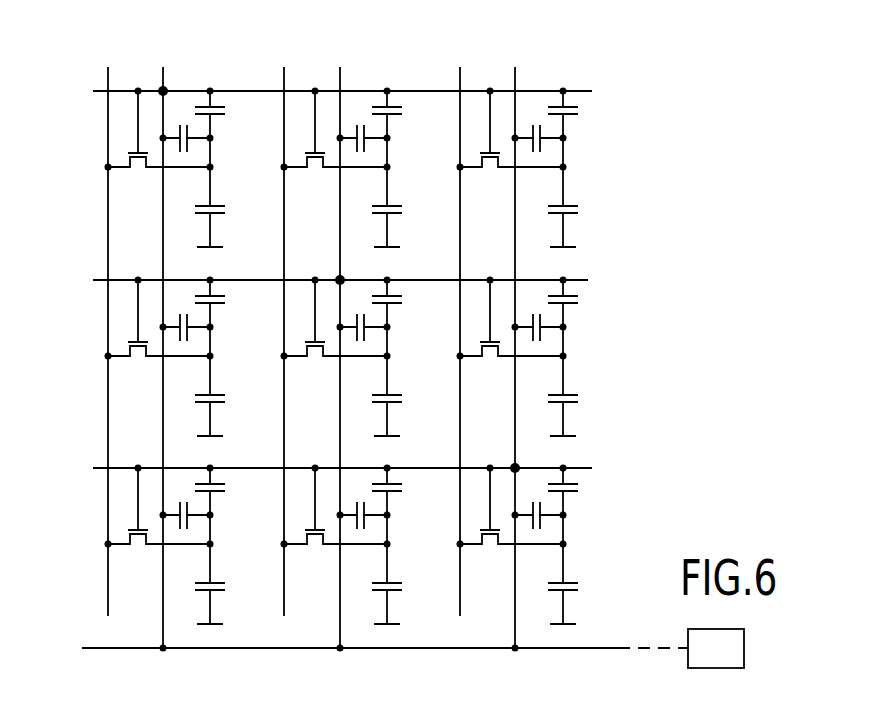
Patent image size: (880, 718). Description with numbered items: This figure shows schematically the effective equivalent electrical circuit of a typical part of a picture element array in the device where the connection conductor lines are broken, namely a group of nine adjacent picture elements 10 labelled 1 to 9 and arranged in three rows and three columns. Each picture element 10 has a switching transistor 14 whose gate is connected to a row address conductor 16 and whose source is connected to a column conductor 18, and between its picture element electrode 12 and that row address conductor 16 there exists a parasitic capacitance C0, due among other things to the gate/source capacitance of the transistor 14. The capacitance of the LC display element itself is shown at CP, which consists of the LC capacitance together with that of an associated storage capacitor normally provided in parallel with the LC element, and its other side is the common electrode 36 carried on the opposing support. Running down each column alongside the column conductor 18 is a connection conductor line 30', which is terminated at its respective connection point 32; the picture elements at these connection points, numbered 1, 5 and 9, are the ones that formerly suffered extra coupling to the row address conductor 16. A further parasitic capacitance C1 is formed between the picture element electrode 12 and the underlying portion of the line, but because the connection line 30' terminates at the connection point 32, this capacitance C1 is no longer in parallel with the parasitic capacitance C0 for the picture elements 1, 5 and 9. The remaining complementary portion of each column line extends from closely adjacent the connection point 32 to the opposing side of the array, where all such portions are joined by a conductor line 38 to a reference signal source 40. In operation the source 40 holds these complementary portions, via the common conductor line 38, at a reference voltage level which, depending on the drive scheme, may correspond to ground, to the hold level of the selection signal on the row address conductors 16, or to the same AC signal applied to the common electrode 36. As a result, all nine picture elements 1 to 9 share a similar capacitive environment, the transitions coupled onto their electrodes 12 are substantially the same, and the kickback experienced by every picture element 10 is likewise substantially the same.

The picture element 10 is at (305, 319).
The picture element electrode 12 is at (224, 206).
The thin film transistor 14 is at (128, 153).
The row address conductor 16 is at (588, 90).
The data line 18 is at (108, 67).
The connection conductor line 30' is at (355, 242).
The connection point 32 is at (162, 89).
The common electrode 36 is at (223, 247).
The conductor line 38 is at (598, 648).
The reference signal source 40 is at (691, 648).
The parasitic capacitance C0 is at (225, 108).
The parasitic capacitance C1 is at (183, 122).
The LC display element capacitance CP is at (225, 213).
The picture element 1 is at (220, 169).
The picture element 2 is at (396, 169).
The picture element 3 is at (572, 169).
The picture element 4 is at (220, 356).
The picture element 5 is at (396, 356).
The picture element 6 is at (572, 356).
The picture element 7 is at (220, 545).
The picture element 8 is at (396, 545).
The picture element 9 is at (572, 545).